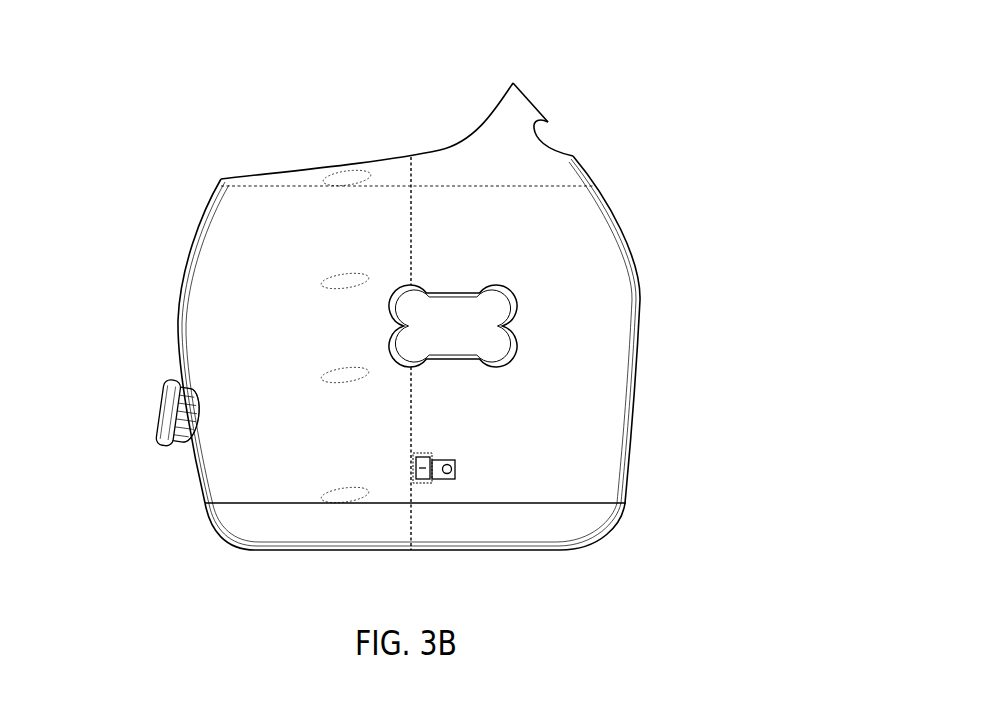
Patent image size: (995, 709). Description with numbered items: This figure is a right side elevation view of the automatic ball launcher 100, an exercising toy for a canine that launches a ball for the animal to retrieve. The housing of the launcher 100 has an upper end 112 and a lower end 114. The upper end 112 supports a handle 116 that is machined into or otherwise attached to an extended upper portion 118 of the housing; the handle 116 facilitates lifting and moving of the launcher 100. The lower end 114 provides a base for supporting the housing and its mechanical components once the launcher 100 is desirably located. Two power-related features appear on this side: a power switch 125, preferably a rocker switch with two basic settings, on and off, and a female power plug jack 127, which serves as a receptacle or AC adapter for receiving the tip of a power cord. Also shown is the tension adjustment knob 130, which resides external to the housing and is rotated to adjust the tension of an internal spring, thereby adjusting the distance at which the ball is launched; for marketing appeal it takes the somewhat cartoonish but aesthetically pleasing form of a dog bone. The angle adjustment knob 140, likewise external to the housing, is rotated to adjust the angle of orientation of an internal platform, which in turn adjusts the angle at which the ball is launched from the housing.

The automatic ball launcher 100 is at (792, 139).
The upper end 112 is at (227, 218).
The lower end 114 is at (243, 528).
The handle 116 is at (550, 130).
The extended upper portion 118 is at (503, 125).
The power switch 125 is at (410, 468).
The female power plug jack 127 is at (455, 468).
The tension adjustment knob 130 is at (497, 313).
The angle adjustment knob 140 is at (160, 405).